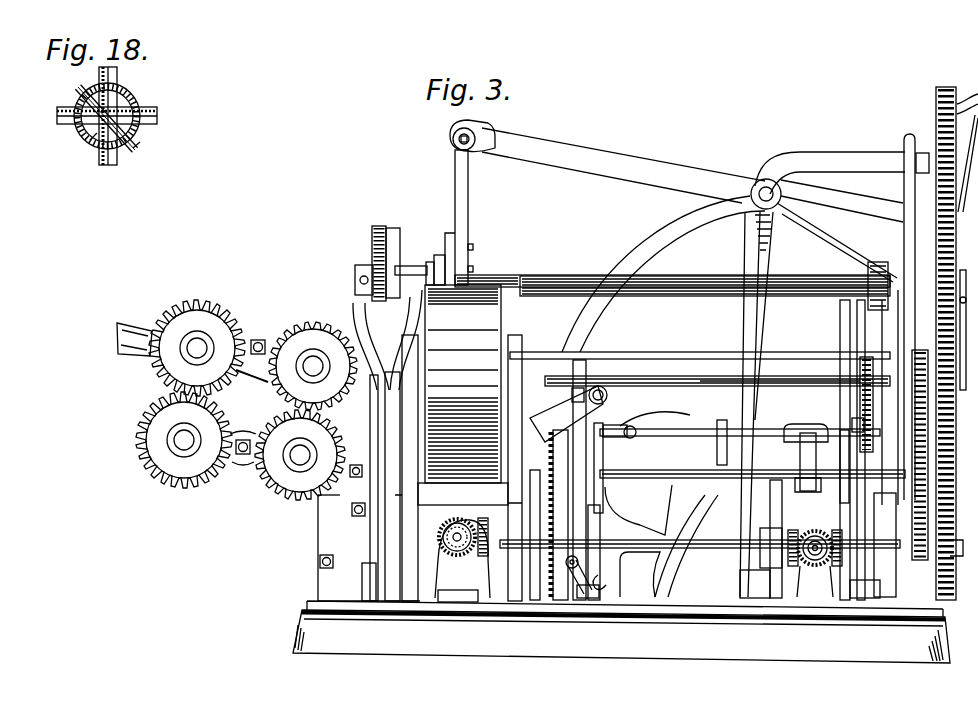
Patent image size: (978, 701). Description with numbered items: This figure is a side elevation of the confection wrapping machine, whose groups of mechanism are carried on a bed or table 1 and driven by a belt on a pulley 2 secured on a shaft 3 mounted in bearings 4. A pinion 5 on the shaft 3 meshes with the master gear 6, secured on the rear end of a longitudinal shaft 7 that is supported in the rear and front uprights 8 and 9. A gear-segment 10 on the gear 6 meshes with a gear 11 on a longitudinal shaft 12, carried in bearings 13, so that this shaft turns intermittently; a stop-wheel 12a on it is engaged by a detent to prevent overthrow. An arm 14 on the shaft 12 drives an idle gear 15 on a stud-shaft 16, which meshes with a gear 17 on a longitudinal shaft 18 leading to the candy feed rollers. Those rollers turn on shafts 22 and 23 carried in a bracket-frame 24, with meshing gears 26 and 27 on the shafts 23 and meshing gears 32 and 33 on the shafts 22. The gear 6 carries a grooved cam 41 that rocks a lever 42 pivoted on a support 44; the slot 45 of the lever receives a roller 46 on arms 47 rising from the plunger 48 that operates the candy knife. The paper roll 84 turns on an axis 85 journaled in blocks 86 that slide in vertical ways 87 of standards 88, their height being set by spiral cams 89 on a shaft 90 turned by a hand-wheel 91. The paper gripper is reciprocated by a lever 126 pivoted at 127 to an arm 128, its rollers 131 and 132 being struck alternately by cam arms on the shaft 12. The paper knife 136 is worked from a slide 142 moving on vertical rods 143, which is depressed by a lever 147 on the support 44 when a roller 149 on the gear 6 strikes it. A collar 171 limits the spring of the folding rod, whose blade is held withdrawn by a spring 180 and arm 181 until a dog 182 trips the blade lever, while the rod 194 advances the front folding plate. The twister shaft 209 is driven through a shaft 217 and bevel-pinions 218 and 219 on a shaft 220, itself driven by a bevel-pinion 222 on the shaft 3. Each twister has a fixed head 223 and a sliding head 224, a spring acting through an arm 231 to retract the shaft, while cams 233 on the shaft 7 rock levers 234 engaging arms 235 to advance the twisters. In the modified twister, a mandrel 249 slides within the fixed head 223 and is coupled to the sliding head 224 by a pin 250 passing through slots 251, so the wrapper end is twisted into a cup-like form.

In FIG. 3, the bed or table 1 is at (298, 630).
In FIG. 3, the pulley 2 is at (842, 500).
In FIG. 3, the shaft 3 is at (700, 544).
In FIG. 3, the bearings 4 is at (852, 582).
In FIG. 3, the pinion 5 is at (948, 536).
In FIG. 3, the gear 6 is at (948, 88).
In FIG. 3, the shaft 7 is at (806, 280).
In FIG. 3, the upright or bracket 8 is at (866, 312).
In FIG. 3, the upright or bracket 9 is at (431, 258).
In FIG. 3, the gear-segment 10 is at (944, 420).
In FIG. 3, the gear 11 is at (904, 508).
In FIG. 3, the longitudinal shaft 12 is at (674, 470).
In FIG. 3, the stop-wheel 12a is at (840, 448).
In FIG. 3, the bearings 13 is at (624, 470).
In FIG. 3, the arm 14 is at (866, 466).
In FIG. 3, the gear 15 is at (888, 397).
In FIG. 3, the stud-shaft 16 is at (852, 424).
In FIG. 3, the gear 17 is at (874, 386).
In FIG. 3, the longitudinal shaft 18 is at (792, 388).
In FIG. 3, the shafts 22 is at (204, 330).
In FIG. 3, the shafts 23 is at (310, 358).
In FIG. 3, the bracket-frame 24 is at (257, 372).
In FIG. 3, the gear 26 is at (313, 322).
In FIG. 3, the gear 27 is at (296, 500).
In FIG. 3, the gear 32 is at (203, 302).
In FIG. 3, the gear 33 is at (178, 472).
In FIG. 3, the grooved cam 41 is at (904, 246).
In FIG. 3, the lever 42 is at (856, 204).
In FIG. 3, the support 44 is at (742, 248).
In FIG. 3, the slot 45 is at (496, 134).
In FIG. 3, the roller 46 is at (453, 138).
In FIG. 3, the arms 47 is at (466, 200).
In FIG. 3, the plunger 48 is at (450, 262).
In FIG. 3, the roll of paper 84 is at (501, 322).
In FIG. 3, the axis 85 is at (463, 383).
In FIG. 3, the blocks 86 is at (463, 403).
In FIG. 3, the vertical ways 87 is at (418, 350).
In FIG. 3, the standards 88 is at (410, 515).
In FIG. 3, the spiral cams 89 is at (395, 496).
In FIG. 3, the shaft 90 is at (474, 484).
In FIG. 3, the hand-wheel 91 is at (568, 478).
In FIG. 3, the lever 126 is at (660, 428).
In FIG. 3, the pivot 127 is at (716, 420).
In FIG. 3, the arm 128 is at (732, 460).
In FIG. 3, the antifriction-roller 131 is at (797, 430).
In FIG. 3, the antifriction-roller 132 is at (615, 460).
In FIG. 3, the knife 136 is at (566, 414).
In FIG. 3, the slide 142 is at (578, 380).
In FIG. 3, the vertical rods 143 is at (572, 330).
In FIG. 3, the lever 147 is at (845, 156).
In FIG. 3, the projection or roller 149 is at (568, 520).
In FIG. 3, the collar 171 is at (560, 540).
In FIG. 3, the spring 180 is at (598, 594).
In FIG. 3, the arm 181 is at (587, 574).
In FIG. 3, the dog or projection 182 is at (603, 584).
In FIG. 3, the rod 194 is at (645, 354).
In FIG. 3, the shaft 209 is at (457, 542).
In FIG. 3, the longitudinal shaft 217 is at (688, 548).
In FIG. 3, the bevel-pinion 218 is at (793, 530).
In FIG. 3, the bevel-pinion 219 is at (815, 532).
In FIG. 3, the shaft 220 is at (815, 552).
In FIG. 3, the bevel-pinion 222 is at (844, 528).
In FIG. 18, the fixed head 223 is at (118, 74).
In FIG. 18, the sliding head 224 is at (85, 138).
In FIG. 3, the arm 231 is at (430, 534).
In FIG. 3, the cams 233 is at (376, 228).
In FIG. 3, the lever 234 is at (376, 420).
In FIG. 3, the arm 235 is at (362, 590).
In FIG. 18, the mandrel 249 is at (92, 142).
In FIG. 18, the pin 250 is at (133, 147).
In FIG. 18, the slots 251 is at (82, 97).